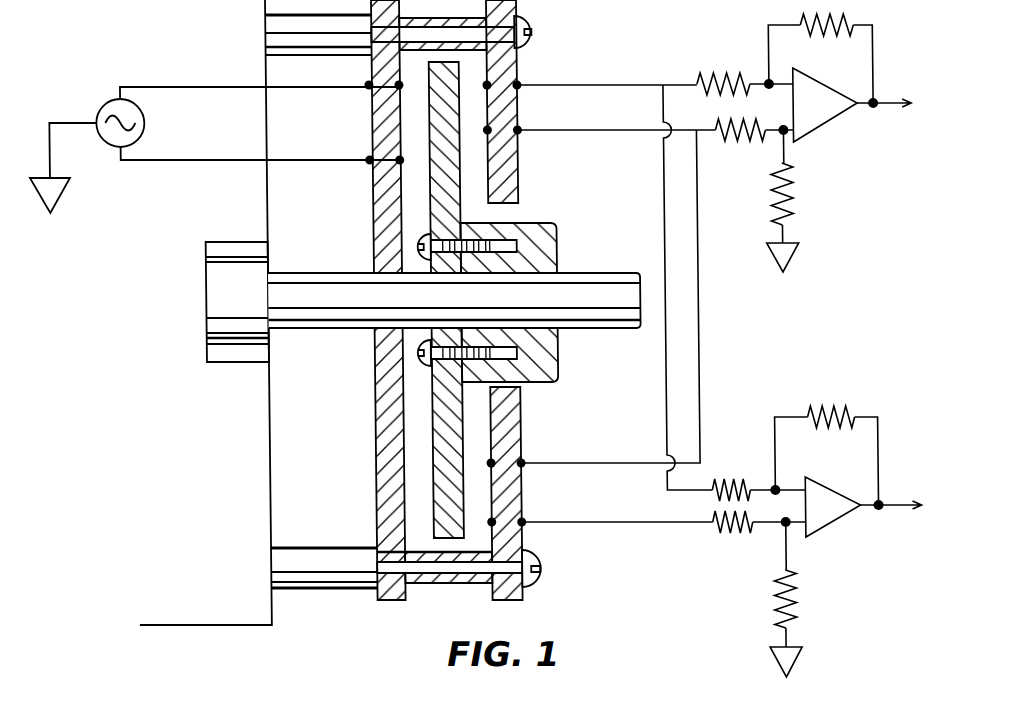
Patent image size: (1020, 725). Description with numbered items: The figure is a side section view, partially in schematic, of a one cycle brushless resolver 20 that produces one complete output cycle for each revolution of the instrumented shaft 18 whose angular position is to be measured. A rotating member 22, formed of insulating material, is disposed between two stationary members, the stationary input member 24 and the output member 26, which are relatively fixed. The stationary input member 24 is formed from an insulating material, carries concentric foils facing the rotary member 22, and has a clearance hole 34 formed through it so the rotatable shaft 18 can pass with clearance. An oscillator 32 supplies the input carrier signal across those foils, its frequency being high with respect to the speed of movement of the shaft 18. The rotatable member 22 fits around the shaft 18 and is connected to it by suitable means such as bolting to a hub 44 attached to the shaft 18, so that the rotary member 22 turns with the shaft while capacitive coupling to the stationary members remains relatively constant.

The shaft 18 is at (299, 283).
The one cycle brushless resolver 20 is at (636, 579).
The rotating member 22 is at (433, 435).
The stationary input member 24 is at (376, 363).
The output member 26 is at (519, 535).
The oscillator 32 is at (106, 98).
The clearance hole 34 is at (378, 260).
The hub 44 is at (532, 238).